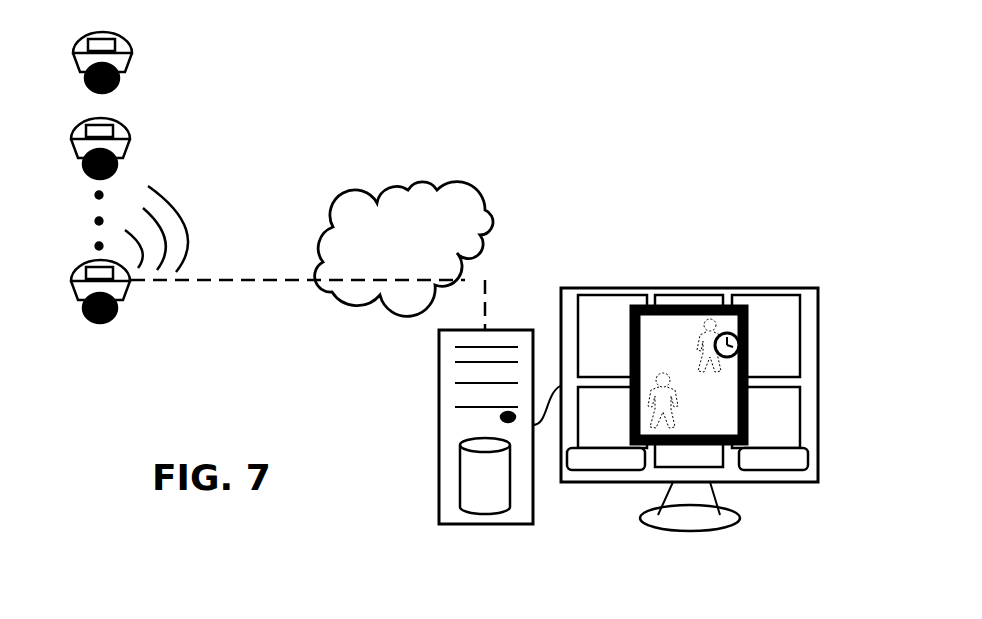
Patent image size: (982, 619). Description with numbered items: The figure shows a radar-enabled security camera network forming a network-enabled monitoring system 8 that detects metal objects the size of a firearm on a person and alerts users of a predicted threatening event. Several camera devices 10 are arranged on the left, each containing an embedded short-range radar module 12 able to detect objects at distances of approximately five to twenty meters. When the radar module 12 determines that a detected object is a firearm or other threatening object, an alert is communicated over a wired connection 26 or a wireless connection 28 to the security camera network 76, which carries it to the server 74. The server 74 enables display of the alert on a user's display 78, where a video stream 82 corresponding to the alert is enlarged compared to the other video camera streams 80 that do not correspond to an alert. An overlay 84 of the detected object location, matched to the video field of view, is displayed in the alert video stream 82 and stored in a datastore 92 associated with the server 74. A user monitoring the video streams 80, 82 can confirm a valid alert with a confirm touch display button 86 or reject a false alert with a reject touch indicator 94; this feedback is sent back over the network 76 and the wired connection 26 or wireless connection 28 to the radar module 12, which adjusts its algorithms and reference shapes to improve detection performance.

The network-enabled monitoring system 8 is at (342, 455).
The camera device 10 is at (125, 52).
The short-range radar module 12 is at (70, 280).
The wired connection 26 is at (245, 280).
The wireless connection 28 is at (148, 186).
The server 74 is at (533, 503).
The security camera network 76 is at (485, 208).
The display 78 is at (818, 433).
The video camera streams 80 is at (610, 293).
The video stream 82 is at (688, 303).
The overlay 84 is at (736, 337).
The confirm touch display button 86 is at (610, 472).
The datastore 92 is at (485, 476).
The reject touch indicator 94 is at (785, 472).